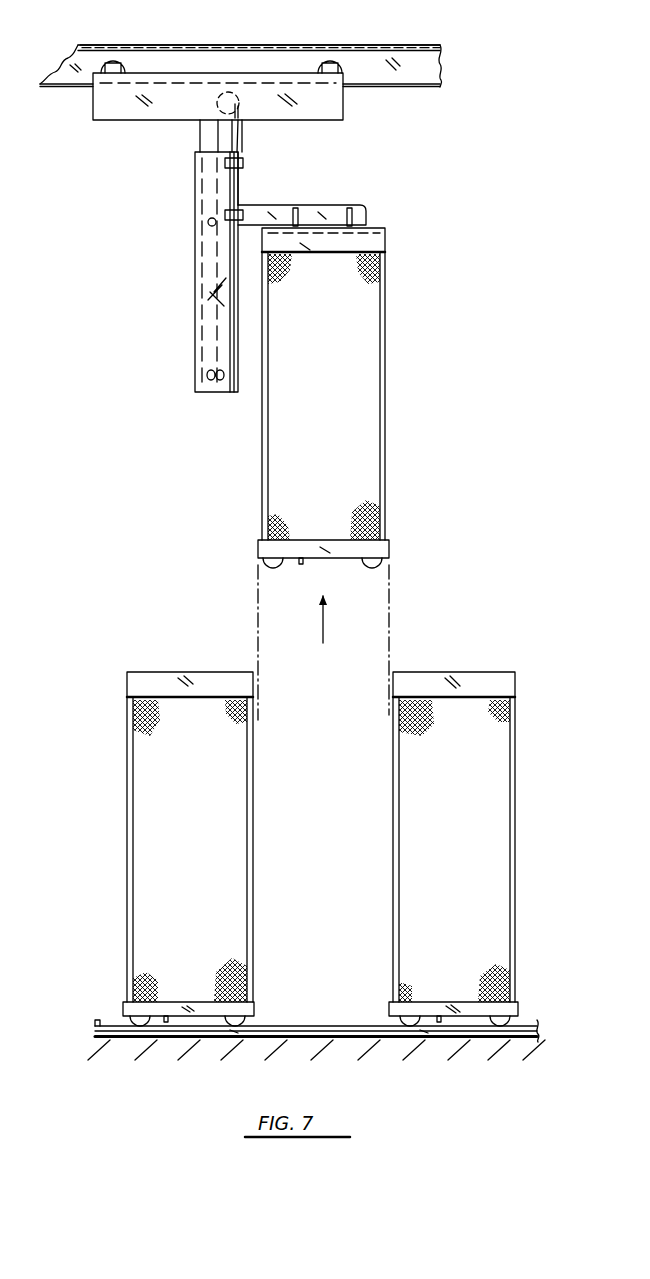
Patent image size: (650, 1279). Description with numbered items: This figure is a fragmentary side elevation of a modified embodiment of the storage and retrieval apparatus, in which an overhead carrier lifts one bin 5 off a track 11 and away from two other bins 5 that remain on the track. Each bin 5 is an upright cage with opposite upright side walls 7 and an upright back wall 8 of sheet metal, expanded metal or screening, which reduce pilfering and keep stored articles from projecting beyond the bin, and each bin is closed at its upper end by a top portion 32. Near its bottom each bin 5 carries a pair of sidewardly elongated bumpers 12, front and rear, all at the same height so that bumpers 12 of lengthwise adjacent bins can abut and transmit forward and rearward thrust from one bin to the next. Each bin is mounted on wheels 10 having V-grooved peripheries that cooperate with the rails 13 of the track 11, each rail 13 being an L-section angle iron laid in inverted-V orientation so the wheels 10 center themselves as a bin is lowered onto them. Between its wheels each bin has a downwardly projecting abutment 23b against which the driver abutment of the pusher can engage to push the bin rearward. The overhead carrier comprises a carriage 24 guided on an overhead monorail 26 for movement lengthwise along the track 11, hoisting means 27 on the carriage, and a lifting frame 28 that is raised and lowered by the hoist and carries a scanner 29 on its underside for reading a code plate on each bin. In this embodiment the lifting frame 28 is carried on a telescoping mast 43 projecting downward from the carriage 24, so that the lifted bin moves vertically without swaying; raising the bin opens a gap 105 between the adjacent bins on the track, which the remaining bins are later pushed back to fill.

The overhead monorail 26 is at (402, 47).
The carriage 24 is at (130, 120).
The telescoping mast 43 is at (195, 285).
The hoisting means 27 is at (256, 190).
The scanner 29 is at (341, 208).
The top cap of housing 32 is at (368, 234).
The lifting frame 28 is at (386, 236).
The bin 5 is at (326, 647).
The back wall 8 is at (262, 483).
The side wall 7 is at (370, 522).
The bumper 12 is at (389, 549).
The wheel 10 is at (270, 569).
The downwardly projecting abutment 23b is at (302, 566).
The gap 105 is at (341, 684).
The track 11 is at (105, 1018).
The rail 13 is at (308, 1026).